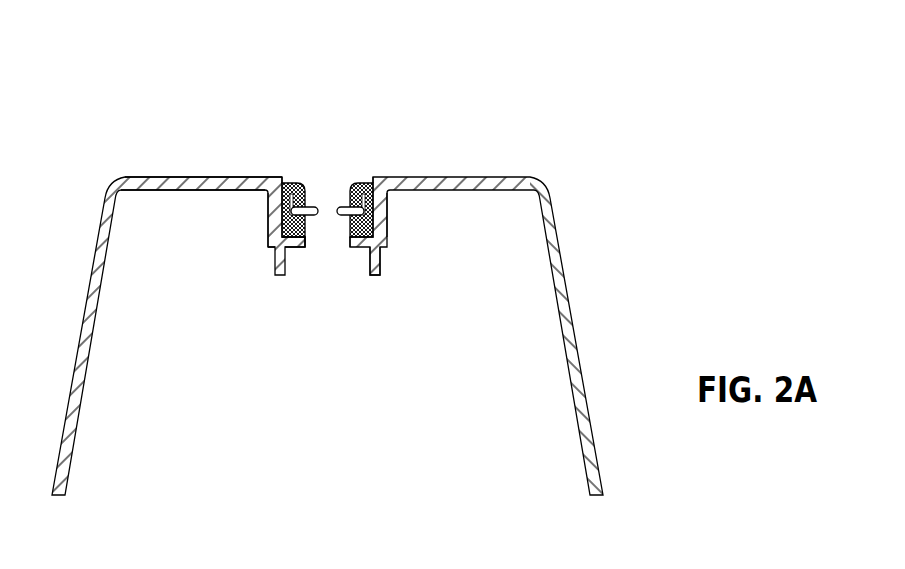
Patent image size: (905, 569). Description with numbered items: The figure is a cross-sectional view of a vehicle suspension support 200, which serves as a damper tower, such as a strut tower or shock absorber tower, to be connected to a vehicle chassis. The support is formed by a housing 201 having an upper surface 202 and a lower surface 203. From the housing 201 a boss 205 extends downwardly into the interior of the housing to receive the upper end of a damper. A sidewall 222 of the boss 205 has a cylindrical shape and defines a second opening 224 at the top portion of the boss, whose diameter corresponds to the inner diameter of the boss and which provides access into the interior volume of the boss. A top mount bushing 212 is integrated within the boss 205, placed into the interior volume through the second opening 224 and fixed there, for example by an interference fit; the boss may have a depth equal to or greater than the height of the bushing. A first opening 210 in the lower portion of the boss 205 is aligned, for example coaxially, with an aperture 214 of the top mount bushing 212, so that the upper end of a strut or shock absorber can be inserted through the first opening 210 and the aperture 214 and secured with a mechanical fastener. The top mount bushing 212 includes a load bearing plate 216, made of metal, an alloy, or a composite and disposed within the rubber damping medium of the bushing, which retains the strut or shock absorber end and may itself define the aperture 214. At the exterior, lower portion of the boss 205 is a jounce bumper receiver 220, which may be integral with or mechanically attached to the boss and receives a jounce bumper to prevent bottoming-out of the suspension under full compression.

The vehicle suspension support 200 is at (622, 145).
The housing 201 is at (88, 413).
The upper surface 202 is at (185, 176).
The lower surface 203 is at (160, 191).
The boss 205 is at (415, 225).
The first opening 210 is at (327, 257).
The top mount bushing 212 is at (290, 183).
The aperture 214 is at (322, 192).
The load bearing plate 216 is at (348, 183).
The jounce bumper receiver 220 is at (377, 277).
The sidewall 222 is at (272, 217).
The second opening 224 is at (328, 168).